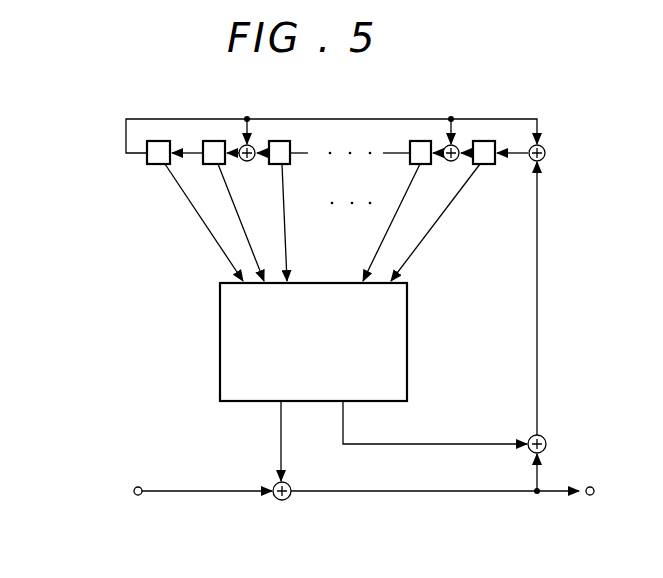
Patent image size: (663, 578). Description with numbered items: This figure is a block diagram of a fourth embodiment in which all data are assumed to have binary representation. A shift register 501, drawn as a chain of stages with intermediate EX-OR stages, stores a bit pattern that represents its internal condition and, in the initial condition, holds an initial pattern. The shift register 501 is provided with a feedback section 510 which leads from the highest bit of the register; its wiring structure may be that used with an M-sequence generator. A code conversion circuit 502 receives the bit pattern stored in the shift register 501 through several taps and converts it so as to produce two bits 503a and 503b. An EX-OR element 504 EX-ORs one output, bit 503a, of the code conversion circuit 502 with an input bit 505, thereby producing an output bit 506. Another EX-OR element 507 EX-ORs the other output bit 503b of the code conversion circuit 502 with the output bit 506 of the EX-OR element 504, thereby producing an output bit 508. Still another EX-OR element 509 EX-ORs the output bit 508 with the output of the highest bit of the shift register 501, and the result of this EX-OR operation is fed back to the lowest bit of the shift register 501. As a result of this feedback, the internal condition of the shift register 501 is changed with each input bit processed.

The shift register 501 is at (131, 166).
The code conversion circuit 502 is at (220, 371).
The output bit 503a is at (281, 449).
The output bit 503b is at (371, 444).
The EX-OR element 504 is at (277, 498).
The input bit 505 is at (169, 492).
The output bit 506 is at (397, 492).
The EX-OR element 507 is at (546, 441).
The output bit 508 is at (538, 331).
The EX-OR element 509 is at (545, 154).
The feedback line of shift register 510 is at (527, 119).